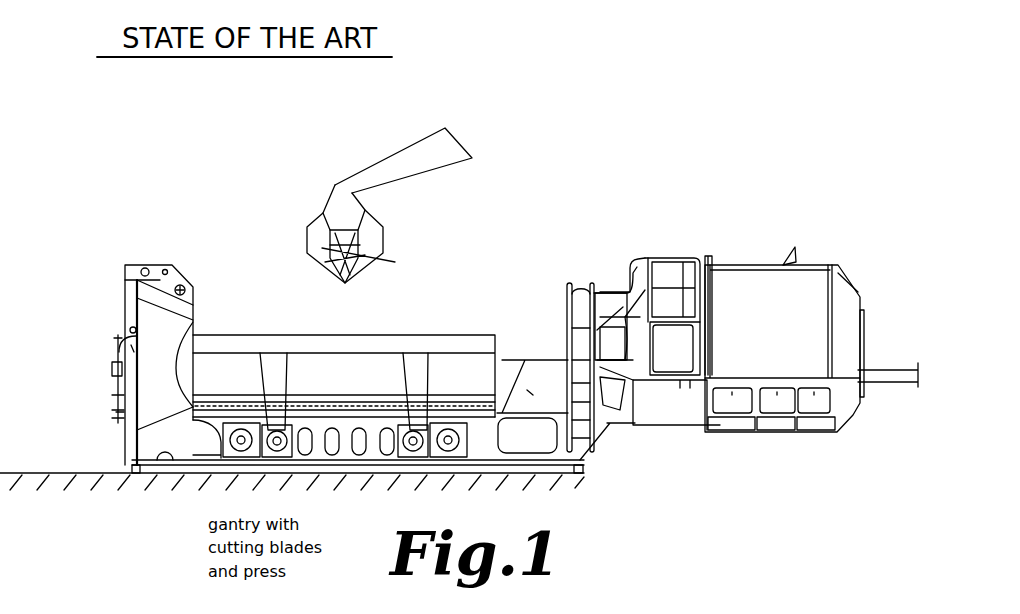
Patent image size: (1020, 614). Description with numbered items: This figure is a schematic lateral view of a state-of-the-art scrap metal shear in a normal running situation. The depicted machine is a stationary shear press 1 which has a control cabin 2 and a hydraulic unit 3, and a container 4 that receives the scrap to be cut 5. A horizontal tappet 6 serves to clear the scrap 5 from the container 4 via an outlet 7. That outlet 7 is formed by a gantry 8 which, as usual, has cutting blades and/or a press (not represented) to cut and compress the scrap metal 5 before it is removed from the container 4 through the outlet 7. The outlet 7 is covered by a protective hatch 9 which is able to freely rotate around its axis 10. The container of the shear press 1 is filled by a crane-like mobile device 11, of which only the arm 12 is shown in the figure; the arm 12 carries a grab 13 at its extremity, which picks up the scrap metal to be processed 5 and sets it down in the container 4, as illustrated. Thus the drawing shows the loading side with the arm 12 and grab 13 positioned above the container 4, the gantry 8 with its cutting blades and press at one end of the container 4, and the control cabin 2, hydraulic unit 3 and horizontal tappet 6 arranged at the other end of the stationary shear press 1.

The stationary shear press 1 is at (683, 115).
The control cabin 2 is at (625, 243).
The hydraulic unit 3 is at (783, 405).
The container 4 is at (435, 334).
The scrap to be cut 5 is at (360, 247).
The horizontal tappet 6 is at (540, 383).
The outlet 7 is at (137, 360).
The gantry 8 is at (158, 385).
The protective hatch 9 is at (118, 412).
The axis 10 is at (133, 330).
The crane-like mobile device 11 is at (388, 177).
The arm 12 is at (383, 170).
The grab 13 is at (322, 223).